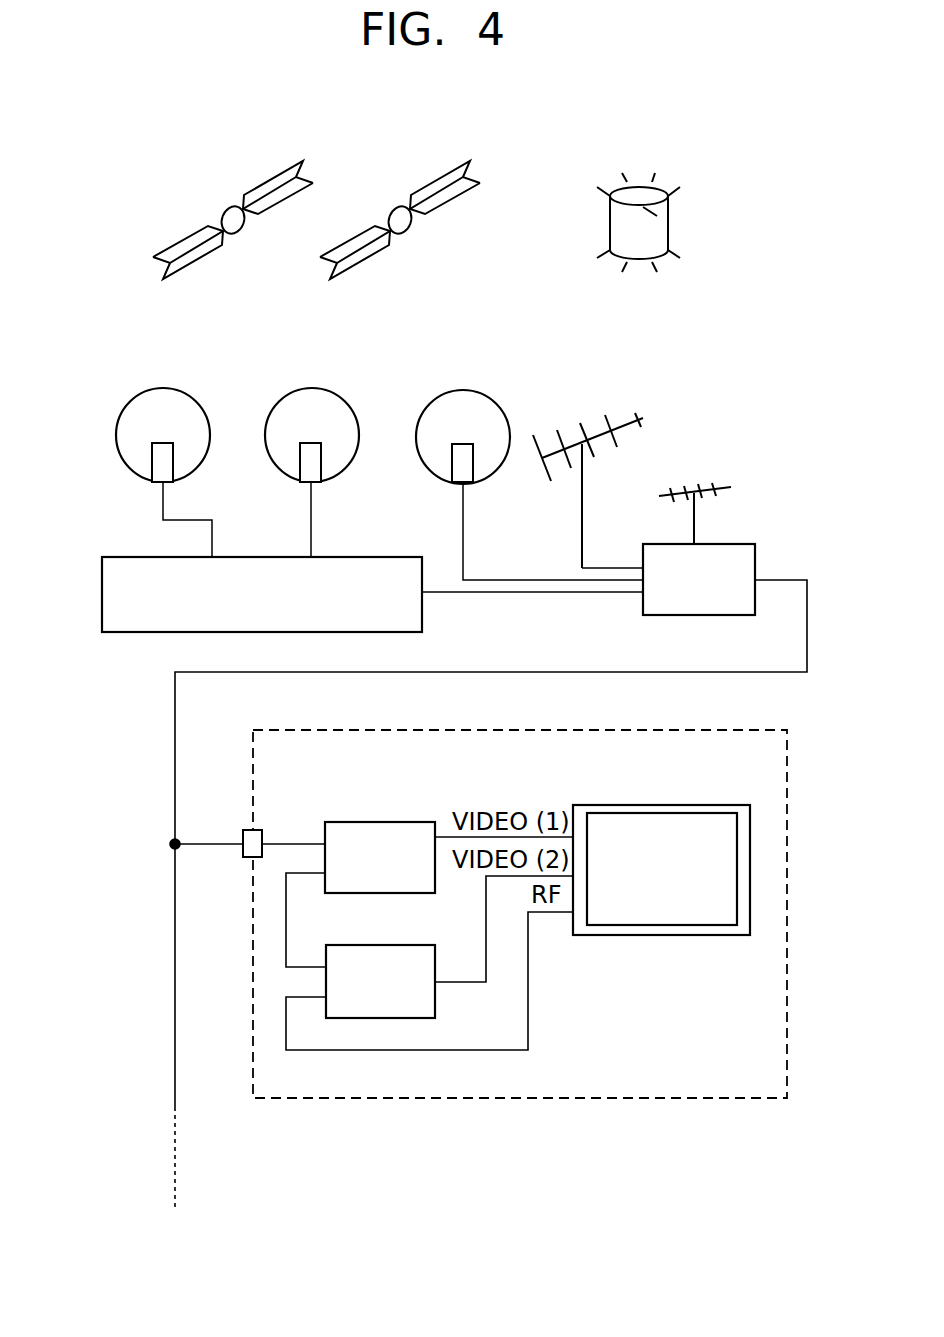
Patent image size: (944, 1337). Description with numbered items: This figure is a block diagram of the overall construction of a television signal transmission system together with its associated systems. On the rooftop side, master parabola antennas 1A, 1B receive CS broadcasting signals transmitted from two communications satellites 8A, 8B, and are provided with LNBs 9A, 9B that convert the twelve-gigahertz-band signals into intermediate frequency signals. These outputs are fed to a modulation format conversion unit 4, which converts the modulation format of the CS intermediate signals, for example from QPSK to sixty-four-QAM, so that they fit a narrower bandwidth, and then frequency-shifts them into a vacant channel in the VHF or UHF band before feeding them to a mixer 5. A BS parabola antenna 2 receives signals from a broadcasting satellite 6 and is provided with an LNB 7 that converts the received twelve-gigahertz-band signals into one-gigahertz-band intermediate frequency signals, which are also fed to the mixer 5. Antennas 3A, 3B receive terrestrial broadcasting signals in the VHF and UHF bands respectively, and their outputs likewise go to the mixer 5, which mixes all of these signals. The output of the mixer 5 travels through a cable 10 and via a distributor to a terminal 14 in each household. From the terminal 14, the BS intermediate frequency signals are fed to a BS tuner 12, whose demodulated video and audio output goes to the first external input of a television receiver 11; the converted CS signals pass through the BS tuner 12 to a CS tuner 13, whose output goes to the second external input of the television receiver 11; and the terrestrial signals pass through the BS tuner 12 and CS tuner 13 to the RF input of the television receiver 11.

The parabola antenna 1A is at (167, 384).
The parabola antenna 1B is at (315, 384).
The parabola antenna 2 is at (466, 386).
The antenna 3A is at (597, 427).
The antenna 3B is at (718, 483).
The modulation format conversion unit 4 is at (102, 592).
The mixer 5 is at (755, 558).
The broadcasting satellite 6 is at (640, 186).
The LNB 7 is at (465, 460).
The communications satellite 8A is at (228, 211).
The communications satellite 8B is at (395, 211).
The LNB 9A is at (162, 458).
The LNB 9B is at (310, 460).
The cable 10 is at (174, 752).
The television receiver 11 is at (700, 805).
The BS tuner 12 is at (385, 822).
The CS tuner 13 is at (437, 1005).
The terminal 14 is at (255, 829).